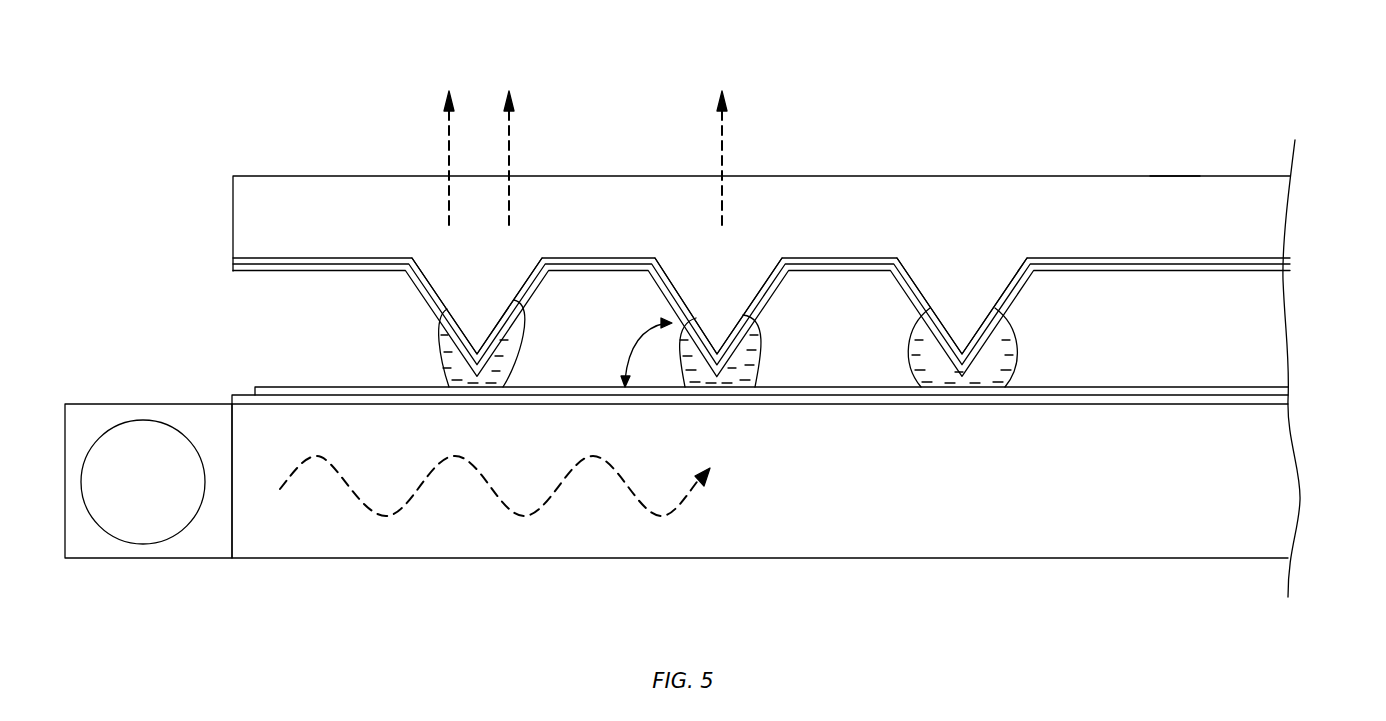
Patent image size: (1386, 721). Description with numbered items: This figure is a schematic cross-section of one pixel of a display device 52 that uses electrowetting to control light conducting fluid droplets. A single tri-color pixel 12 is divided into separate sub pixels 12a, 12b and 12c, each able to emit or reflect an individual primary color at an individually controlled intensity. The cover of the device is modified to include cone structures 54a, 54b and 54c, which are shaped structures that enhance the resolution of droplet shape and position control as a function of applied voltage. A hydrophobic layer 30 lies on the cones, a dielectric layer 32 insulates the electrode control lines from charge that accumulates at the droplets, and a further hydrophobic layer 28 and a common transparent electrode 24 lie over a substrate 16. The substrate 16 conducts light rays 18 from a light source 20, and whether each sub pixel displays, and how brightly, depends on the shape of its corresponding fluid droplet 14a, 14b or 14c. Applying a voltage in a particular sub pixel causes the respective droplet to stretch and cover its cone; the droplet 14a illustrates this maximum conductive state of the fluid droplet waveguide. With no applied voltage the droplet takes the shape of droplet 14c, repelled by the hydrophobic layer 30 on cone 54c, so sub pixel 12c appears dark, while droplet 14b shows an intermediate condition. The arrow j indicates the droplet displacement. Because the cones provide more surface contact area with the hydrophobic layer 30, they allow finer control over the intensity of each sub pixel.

The display device 52 is at (660, 32).
The tri-color pixel 12 is at (810, 104).
The sub pixel 12a is at (428, 170).
The sub pixel 12b is at (693, 170).
The sub pixel 12c is at (930, 170).
The cone structure 54a is at (469, 280).
The cone structure 54b is at (710, 280).
The cone structure 54c is at (957, 280).
The fluid droplet 14a is at (450, 362).
The fluid droplet 14b is at (748, 361).
The fluid droplet 14c is at (1017, 361).
The dielectric layer 32 is at (1237, 262).
The hydrophobic layer 30 is at (1248, 272).
The hydrophobic layer 28 is at (1233, 390).
The common transparent electrode 24 is at (1240, 405).
The substrate 16 is at (1153, 505).
The light rays 18 is at (670, 518).
The light source 20 is at (205, 540).
The meniscus displacement j is at (642, 352).